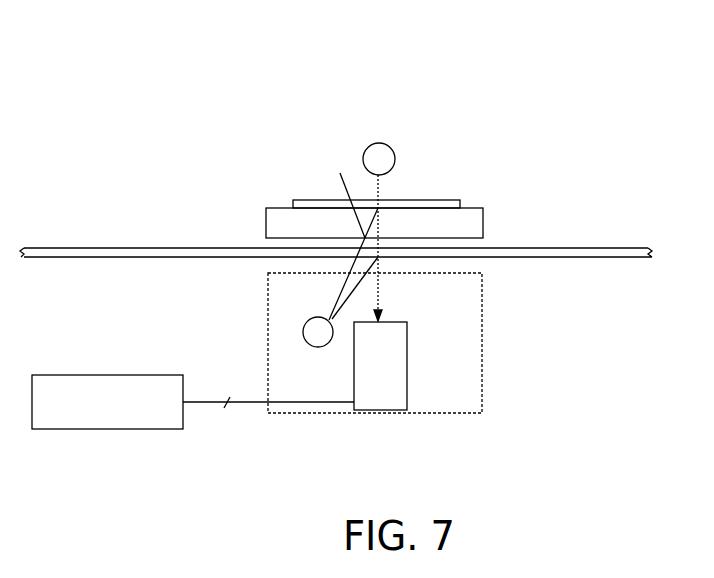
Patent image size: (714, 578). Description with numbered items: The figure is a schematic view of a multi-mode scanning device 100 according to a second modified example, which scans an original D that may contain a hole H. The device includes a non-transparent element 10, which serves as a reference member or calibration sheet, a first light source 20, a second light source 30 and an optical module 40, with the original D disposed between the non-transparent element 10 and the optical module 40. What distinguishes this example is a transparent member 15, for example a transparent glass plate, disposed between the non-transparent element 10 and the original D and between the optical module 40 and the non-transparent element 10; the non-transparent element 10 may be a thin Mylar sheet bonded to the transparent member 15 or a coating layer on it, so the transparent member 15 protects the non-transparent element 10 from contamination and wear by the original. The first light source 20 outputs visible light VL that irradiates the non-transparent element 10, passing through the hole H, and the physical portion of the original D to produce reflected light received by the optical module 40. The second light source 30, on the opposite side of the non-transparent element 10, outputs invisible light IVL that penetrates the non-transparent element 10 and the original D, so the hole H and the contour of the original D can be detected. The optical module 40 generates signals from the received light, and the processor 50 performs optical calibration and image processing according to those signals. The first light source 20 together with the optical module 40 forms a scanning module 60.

The multi-mode scanning device 100 is at (418, 52).
The non-transparent element 10 is at (295, 203).
The transparent member 15 is at (478, 218).
The first light source 20 is at (303, 331).
The second light source 30 is at (395, 152).
The optical module 40 is at (398, 370).
The processor 50 is at (70, 378).
The scanning module 60 is at (482, 383).
The original D is at (631, 249).
The hole H is at (345, 189).
The invisible light IVL is at (381, 183).
The visible light VL is at (352, 277).